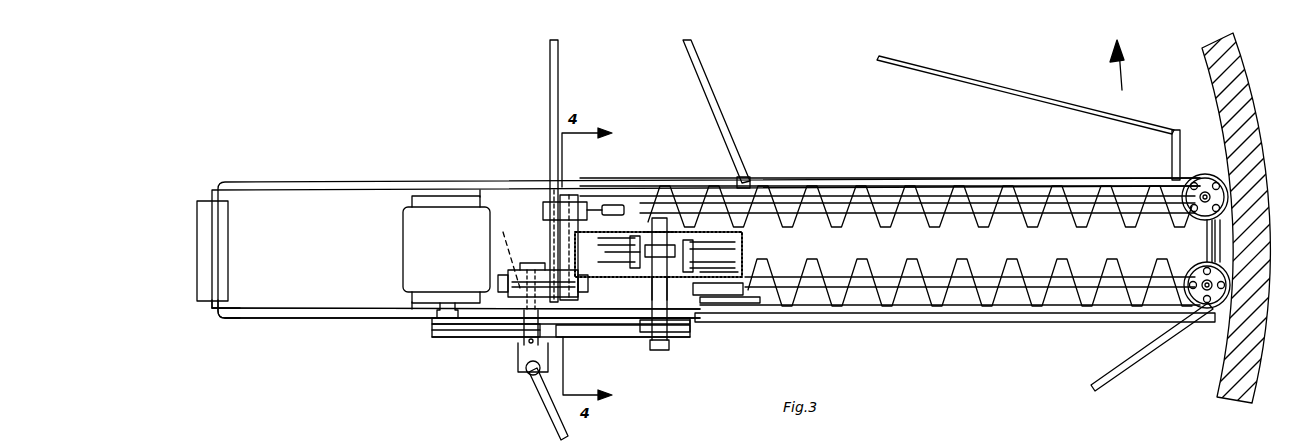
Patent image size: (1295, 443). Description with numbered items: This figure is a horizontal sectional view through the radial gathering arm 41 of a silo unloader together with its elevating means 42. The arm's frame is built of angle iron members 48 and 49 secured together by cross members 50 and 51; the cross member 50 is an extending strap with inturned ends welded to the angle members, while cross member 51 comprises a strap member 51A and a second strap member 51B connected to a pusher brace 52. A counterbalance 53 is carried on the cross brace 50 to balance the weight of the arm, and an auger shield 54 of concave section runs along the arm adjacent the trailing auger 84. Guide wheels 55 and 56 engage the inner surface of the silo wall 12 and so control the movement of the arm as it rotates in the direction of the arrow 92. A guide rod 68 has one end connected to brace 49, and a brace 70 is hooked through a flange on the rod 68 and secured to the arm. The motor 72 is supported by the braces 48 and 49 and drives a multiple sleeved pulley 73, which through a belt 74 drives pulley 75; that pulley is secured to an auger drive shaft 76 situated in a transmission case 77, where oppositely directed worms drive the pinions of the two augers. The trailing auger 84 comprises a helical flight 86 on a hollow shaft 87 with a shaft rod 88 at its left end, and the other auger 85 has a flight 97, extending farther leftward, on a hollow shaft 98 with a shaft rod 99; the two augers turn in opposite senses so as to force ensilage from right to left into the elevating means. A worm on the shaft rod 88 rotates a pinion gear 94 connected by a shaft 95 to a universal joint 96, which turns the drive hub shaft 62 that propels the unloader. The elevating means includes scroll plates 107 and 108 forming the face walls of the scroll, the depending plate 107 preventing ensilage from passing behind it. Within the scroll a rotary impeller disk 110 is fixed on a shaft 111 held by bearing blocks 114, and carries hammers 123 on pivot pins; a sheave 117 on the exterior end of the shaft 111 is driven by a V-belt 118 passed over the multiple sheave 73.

The wall 12 is at (1240, 72).
The radial gathering arm 41 is at (932, 180).
The elevating means 42 is at (755, 248).
The angle iron member 48 is at (322, 318).
The angle iron member 49 is at (340, 182).
The cross member 50 is at (216, 306).
The cross member 51 is at (1198, 240).
The strap member 51A is at (1205, 234).
The strap member 51B is at (1218, 247).
The pusher brace 52 is at (1132, 360).
The counterbalance 53 is at (197, 257).
The auger shield 54 is at (985, 322).
The guide wheel 55 is at (1208, 175).
The guide wheel 56 is at (1220, 300).
The drive hub shaft 62 is at (552, 418).
The guide rod 68 is at (550, 98).
The brace 70 is at (702, 66).
The motor 72 is at (452, 251).
The multiple sleeved pulley 73 is at (432, 337).
The belt 74 is at (483, 325).
The pulley 75 is at (580, 337).
The auger drive shaft 76 is at (558, 250).
The transmission case 77 is at (560, 236).
The trailing auger 84 is at (1108, 322).
The auger 85 is at (873, 190).
The helical flight 86 is at (940, 266).
The hollow shaft 87 is at (1040, 275).
The shaft rod 88 is at (726, 303).
The arrow 92 is at (1122, 74).
The pinion gear 94 is at (505, 252).
The shaft 95 is at (520, 343).
The universal joint 96 is at (524, 372).
The flight 97 is at (940, 212).
The hollow shaft 98 is at (873, 210).
The shaft rod 99 is at (612, 210).
The scroll plate 107 is at (712, 295).
The scroll plate 108 is at (740, 177).
The disk 110 is at (738, 246).
The shaft 111 is at (668, 295).
The bearing block 114 is at (660, 230).
The sheave 117 is at (688, 335).
The V-belt 118 is at (615, 337).
The hammer 123 is at (740, 268).